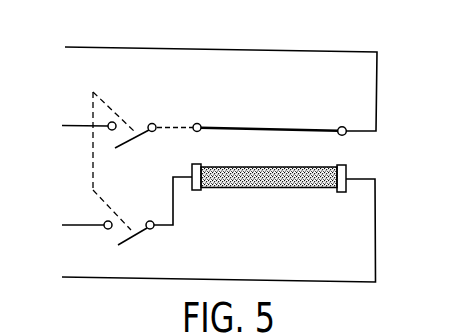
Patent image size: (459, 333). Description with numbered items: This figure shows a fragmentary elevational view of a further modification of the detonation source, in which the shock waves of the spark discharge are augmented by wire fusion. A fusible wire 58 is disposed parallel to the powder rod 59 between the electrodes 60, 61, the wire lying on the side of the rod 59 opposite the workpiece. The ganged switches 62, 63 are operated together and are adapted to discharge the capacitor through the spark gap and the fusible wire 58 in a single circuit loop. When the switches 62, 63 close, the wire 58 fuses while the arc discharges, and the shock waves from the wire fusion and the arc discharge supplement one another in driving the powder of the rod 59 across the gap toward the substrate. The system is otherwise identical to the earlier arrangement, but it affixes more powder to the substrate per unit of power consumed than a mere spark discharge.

The fusible wire 58 is at (233, 128).
The powder rod 59 is at (258, 188).
The electrode 60 is at (192, 165).
The electrode 61 is at (342, 175).
The ganged switch 62 is at (137, 135).
The ganged switch 63 is at (143, 232).